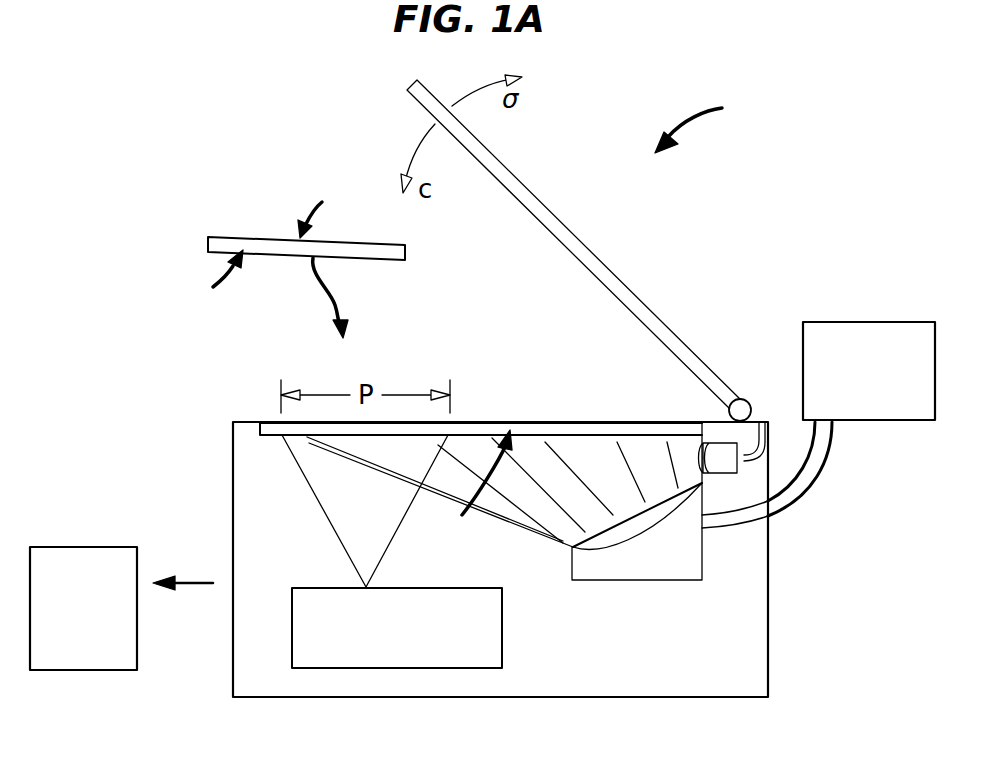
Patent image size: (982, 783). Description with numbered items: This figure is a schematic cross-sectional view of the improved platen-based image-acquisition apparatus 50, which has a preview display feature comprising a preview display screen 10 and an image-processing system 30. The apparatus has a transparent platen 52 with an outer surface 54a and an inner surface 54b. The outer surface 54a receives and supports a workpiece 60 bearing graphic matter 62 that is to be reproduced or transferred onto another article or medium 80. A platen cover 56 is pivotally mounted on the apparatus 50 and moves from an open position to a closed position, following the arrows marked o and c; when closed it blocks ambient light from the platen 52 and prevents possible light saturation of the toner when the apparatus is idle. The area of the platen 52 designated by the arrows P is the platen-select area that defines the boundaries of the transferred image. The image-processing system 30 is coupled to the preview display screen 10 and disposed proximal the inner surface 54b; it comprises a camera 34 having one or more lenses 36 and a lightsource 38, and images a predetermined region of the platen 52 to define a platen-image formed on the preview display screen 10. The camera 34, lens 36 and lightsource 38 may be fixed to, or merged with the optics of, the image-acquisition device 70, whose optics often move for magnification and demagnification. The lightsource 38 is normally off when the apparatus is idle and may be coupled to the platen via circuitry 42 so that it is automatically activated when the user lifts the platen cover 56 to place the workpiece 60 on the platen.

The preview display screen 10 is at (858, 331).
The image-processing system 30 is at (853, 435).
The camera 34 is at (688, 568).
The lens 36 is at (613, 543).
The lightsource 38 is at (712, 448).
The circuitry 42 is at (773, 424).
The image-acquisition apparatus 50 is at (704, 122).
The transparent platen 52 is at (582, 428).
The outer surface 54a is at (518, 424).
The inner surface 54b is at (427, 508).
The platen cover 56 is at (560, 223).
The workpiece 60 is at (245, 237).
The graphic matter 62 is at (266, 255).
The image-acquisition device 70 is at (494, 632).
The medium 80 is at (93, 662).